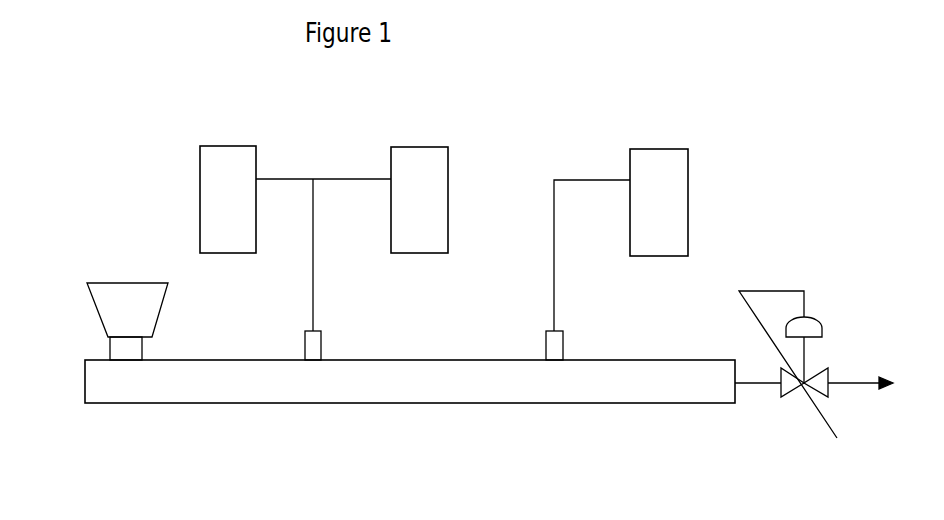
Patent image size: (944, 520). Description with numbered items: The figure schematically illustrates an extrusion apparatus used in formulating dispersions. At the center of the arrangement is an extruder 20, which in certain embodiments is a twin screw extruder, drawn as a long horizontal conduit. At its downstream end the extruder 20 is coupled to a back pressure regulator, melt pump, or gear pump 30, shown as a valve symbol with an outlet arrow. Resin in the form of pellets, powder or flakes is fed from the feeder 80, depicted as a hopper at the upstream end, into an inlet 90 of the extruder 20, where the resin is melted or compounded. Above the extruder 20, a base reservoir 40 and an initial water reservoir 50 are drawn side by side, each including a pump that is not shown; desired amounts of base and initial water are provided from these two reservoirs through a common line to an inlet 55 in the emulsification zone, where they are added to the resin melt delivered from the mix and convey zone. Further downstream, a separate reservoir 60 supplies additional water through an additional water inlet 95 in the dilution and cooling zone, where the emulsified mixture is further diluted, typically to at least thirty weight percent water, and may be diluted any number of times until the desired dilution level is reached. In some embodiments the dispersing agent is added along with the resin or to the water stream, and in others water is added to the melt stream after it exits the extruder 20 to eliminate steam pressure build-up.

The extruder 20 is at (410, 381).
The back pressure regulator, melt pump, or gear pump 30 is at (814, 380).
The base reservoir 40 is at (228, 199).
The initial water reservoir 50 is at (419, 200).
The inlet 55 is at (305, 340).
The reservoir 60 is at (659, 202).
The feeder 80 is at (127, 310).
The inlet 90 is at (110, 350).
The additional water inlet 95 is at (546, 340).